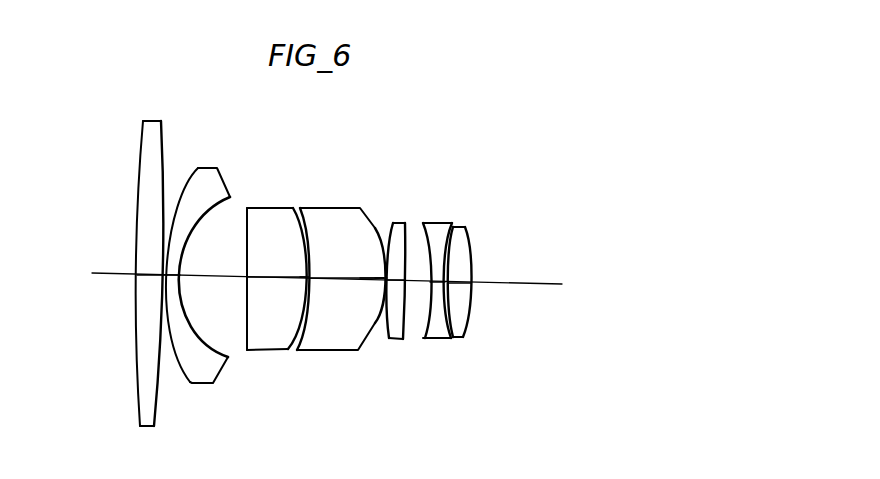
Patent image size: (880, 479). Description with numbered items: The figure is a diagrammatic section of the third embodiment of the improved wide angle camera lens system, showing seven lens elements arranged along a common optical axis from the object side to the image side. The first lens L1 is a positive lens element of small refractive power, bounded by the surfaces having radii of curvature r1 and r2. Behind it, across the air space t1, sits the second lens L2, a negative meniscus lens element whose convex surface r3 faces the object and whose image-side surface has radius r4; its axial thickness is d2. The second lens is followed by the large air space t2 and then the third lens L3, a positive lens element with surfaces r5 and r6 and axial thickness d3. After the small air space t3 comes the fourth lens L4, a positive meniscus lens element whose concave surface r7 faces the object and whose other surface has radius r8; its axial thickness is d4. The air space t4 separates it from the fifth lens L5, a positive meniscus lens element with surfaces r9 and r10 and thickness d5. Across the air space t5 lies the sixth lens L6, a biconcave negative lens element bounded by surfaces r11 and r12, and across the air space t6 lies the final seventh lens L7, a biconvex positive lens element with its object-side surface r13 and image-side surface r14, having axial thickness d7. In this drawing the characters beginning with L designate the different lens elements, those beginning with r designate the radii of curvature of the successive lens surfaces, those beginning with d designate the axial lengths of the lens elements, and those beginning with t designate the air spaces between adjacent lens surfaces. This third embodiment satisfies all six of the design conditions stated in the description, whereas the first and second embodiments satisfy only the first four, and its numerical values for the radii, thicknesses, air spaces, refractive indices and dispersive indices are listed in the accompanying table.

The first lens L1 is at (155, 130).
The second lens L2 is at (212, 178).
The third lens L3 is at (273, 216).
The fourth lens L4 is at (339, 220).
The fifth lens L5 is at (396, 231).
The sixth lens L6 is at (438, 232).
The seventh lens L7 is at (460, 229).
The radius of curvature of first lens surface r1 is at (138, 403).
The radius of curvature of second lens surface r2 is at (158, 410).
The radius of curvature of third lens surface r3 is at (189, 377).
The radius of curvature of fourth lens surface r4 is at (229, 358).
The radius of curvature of fifth lens surface r5 is at (242, 333).
The radius of curvature of sixth lens surface r6 is at (287, 336).
The radius of curvature of seventh lens surface r7 is at (303, 324).
The radius of curvature of eighth lens surface r8 is at (371, 336).
The radius of curvature of ninth lens surface r9 is at (388, 332).
The radius of curvature of tenth lens surface r10 is at (403, 325).
The radius of curvature of eleventh lens surface r11 is at (427, 326).
The radius of curvature of twelfth lens surface r12 is at (443, 334).
The radius of curvature of thirteenth lens surface r13 is at (446, 333).
The radius of curvature of fourteenth lens surface r14 is at (470, 301).
The air space between first and second lenses t1 is at (163, 281).
The air space between second and third lenses t2 is at (194, 295).
The air space between third and fourth lenses t3 is at (303, 277).
The air space between fourth and fifth lenses t4 is at (382, 273).
The air space between fifth and sixth lenses t5 is at (407, 274).
The air space between sixth and seventh lenses t6 is at (452, 267).
The axial thickness of second lens d2 is at (166, 258).
The axial thickness of third lens d3 is at (276, 266).
The axial thickness of fourth lens d4 is at (347, 270).
The axial thickness of fifth lens d5 is at (366, 255).
The axial thickness of seventh lens d7 is at (461, 275).